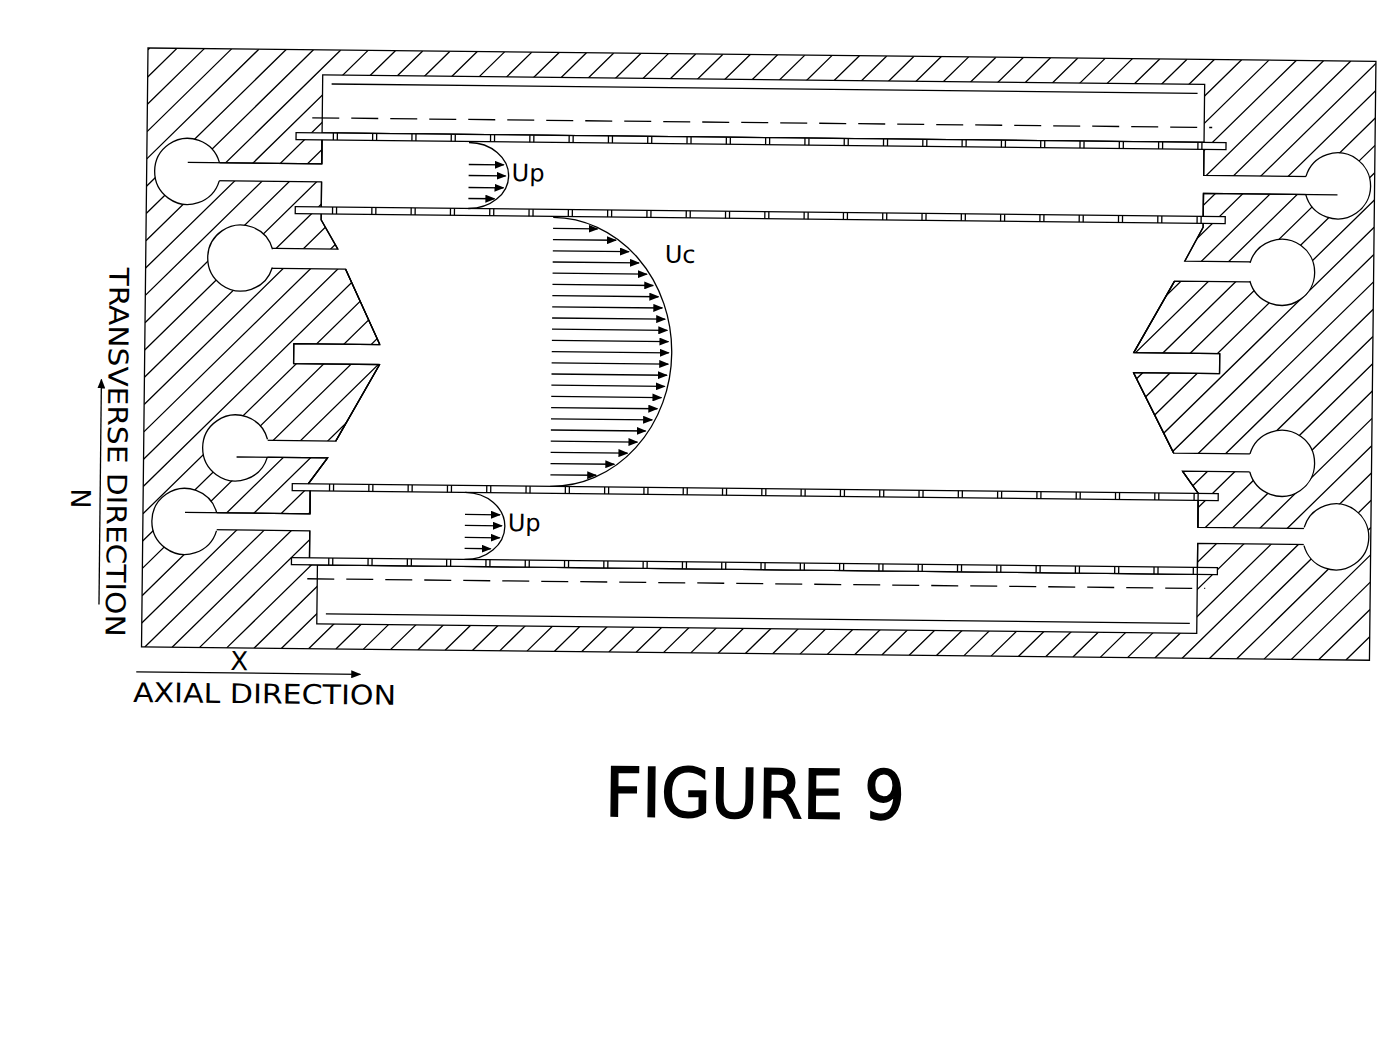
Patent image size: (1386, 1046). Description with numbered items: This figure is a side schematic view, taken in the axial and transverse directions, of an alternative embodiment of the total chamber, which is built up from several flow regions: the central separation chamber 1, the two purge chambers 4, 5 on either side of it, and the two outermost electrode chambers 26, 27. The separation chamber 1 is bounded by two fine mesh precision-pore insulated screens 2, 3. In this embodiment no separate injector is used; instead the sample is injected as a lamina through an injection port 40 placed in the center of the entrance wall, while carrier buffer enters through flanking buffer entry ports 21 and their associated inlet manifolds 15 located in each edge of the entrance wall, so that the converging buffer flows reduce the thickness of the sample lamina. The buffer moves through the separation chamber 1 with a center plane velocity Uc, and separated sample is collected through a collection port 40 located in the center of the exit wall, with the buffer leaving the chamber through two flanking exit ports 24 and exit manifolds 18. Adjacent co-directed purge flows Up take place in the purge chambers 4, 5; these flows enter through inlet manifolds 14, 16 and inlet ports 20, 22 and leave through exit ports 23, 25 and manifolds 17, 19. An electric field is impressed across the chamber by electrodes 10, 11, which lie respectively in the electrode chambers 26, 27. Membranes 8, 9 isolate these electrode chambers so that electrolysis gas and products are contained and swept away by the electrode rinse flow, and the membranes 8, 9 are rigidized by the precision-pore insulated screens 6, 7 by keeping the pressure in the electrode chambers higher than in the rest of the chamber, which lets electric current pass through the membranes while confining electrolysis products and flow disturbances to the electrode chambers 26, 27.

The separation chamber 1 is at (751, 465).
The precision-pore insulated screen 2 is at (860, 214).
The precision-pore insulated screen 3 is at (913, 480).
The purge chamber 4 is at (754, 184).
The purge chamber 5 is at (750, 542).
The precision-pore insulated screen 6 is at (940, 141).
The precision-pore insulated screen 7 is at (902, 554).
The membrane 8 is at (898, 113).
The membrane 9 is at (937, 580).
The electrode 10 is at (1045, 88).
The electrode 11 is at (842, 608).
The inlet manifold 14 is at (187, 171).
The inlet manifold 15 is at (238, 353).
The inlet manifold 16 is at (185, 521).
The exit manifold 17 is at (1337, 186).
The exit manifold 18 is at (1281, 368).
The exit manifold 19 is at (1335, 537).
The inlet port 20 is at (236, 154).
The buffer entry port 21 is at (305, 271).
The inlet port 22 is at (233, 510).
The exit port 23 is at (1247, 159).
The exit port 24 is at (1225, 274).
The exit port 25 is at (1240, 509).
The electrode chamber 26 is at (748, 111).
The electrode chamber 27 is at (744, 609).
The injection port 40 is at (292, 352).